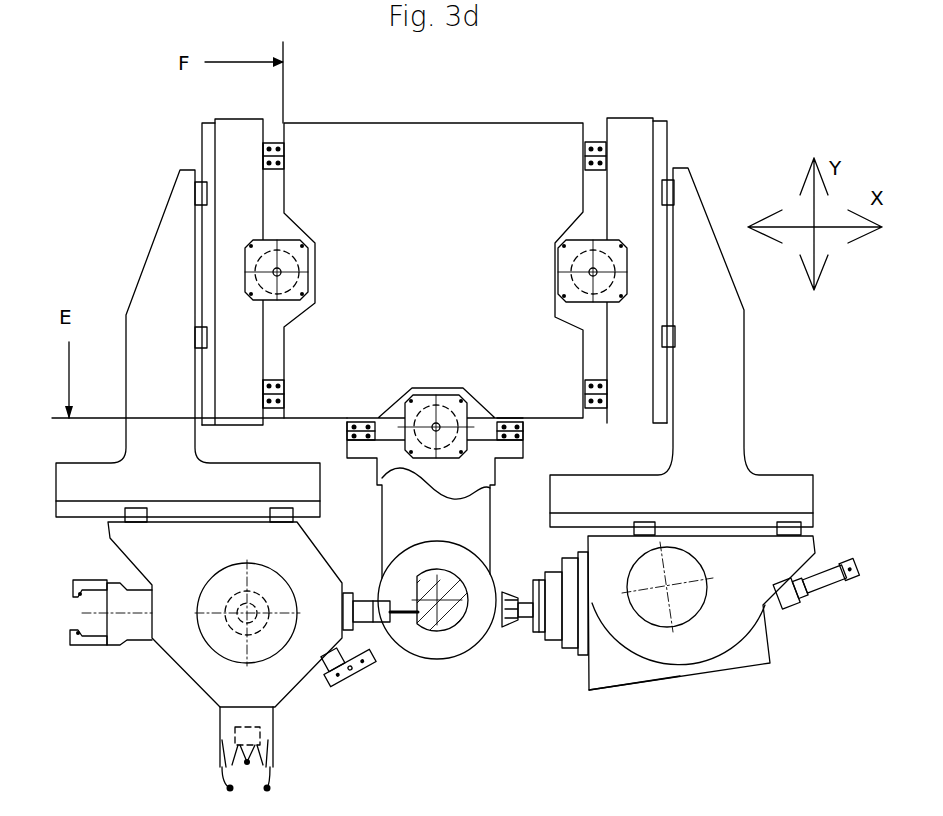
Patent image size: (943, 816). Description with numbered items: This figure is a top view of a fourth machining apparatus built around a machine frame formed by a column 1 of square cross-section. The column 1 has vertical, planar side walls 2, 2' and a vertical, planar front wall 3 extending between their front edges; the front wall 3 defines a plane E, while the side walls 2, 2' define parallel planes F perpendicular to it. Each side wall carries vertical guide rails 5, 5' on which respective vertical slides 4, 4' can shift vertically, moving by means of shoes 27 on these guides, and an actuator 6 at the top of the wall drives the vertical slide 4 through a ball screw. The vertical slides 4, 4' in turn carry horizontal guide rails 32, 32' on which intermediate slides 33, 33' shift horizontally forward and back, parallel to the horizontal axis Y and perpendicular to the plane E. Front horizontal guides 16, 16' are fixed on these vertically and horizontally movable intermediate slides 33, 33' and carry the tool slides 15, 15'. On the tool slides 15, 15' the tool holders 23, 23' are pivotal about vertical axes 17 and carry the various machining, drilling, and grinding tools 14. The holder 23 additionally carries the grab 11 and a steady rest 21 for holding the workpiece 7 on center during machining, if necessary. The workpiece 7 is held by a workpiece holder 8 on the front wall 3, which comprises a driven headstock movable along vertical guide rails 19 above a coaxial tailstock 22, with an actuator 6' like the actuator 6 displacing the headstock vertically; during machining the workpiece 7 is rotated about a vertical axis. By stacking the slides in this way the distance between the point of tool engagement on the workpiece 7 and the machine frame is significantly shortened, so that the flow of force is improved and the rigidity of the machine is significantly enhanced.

The column 1 is at (523, 128).
The side wall 2 is at (211, 193).
The side wall 2' is at (658, 191).
The front wall 3 is at (544, 418).
The vertical slide 4 is at (239, 257).
The vertical slide 4' is at (637, 255).
The vertical guide rails 5 is at (299, 275).
The vertical guide rails 5' is at (572, 275).
The actuator 6 is at (436, 258).
The actuator 6' is at (436, 396).
The workpiece 7 is at (453, 622).
The workpiece holder 8 is at (452, 647).
The grab 11 is at (100, 646).
The tools 14 is at (400, 615).
The horizontal slide 15 is at (211, 614).
The horizontal slide 15' is at (701, 613).
The horizontal guide rails 16 is at (174, 531).
The horizontal guide rails 16' is at (702, 508).
The pivot axis 17 is at (240, 612).
The vertical guide rails 19 is at (360, 421).
The steady rest 21 is at (273, 738).
The tailstock 22 is at (455, 663).
The tool holder 23 is at (319, 712).
The tool holder 23' is at (634, 710).
The shoes 27 is at (262, 152).
The horizontal guide rails 32 is at (153, 274).
The horizontal guide rails 32' is at (688, 264).
The intermediate slide 33 is at (188, 343).
The intermediate slide 33' is at (685, 347).